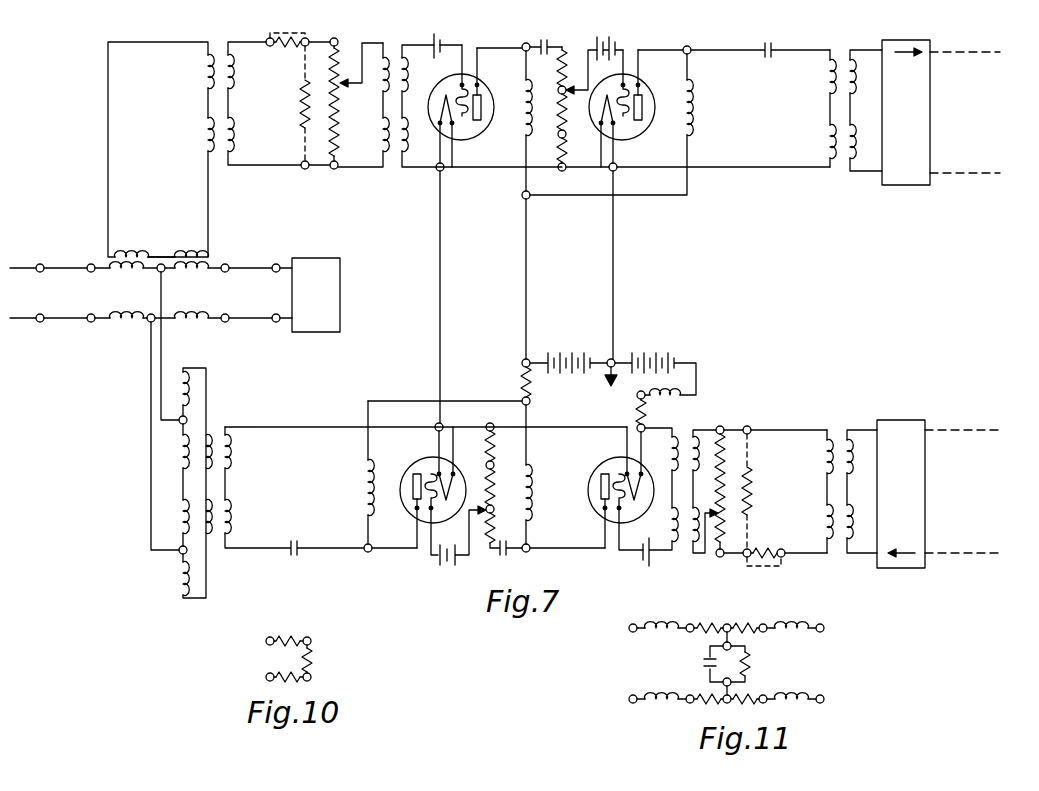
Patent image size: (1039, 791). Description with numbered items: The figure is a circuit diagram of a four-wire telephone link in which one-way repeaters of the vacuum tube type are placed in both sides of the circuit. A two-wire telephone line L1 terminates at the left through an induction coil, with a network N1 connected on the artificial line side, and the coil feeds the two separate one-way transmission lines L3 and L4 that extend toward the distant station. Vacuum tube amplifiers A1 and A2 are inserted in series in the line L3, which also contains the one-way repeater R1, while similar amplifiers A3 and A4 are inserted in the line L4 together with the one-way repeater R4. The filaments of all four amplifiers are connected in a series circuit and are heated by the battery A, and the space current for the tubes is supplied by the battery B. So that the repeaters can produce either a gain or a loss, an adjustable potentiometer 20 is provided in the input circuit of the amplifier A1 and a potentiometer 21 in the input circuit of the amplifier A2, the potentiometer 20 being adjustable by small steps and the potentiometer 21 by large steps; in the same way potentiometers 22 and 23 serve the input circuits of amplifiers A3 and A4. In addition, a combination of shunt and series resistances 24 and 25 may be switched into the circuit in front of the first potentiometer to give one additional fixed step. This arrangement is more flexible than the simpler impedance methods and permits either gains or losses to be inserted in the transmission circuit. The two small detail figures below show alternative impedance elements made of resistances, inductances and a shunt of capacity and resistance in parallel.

The adjustable potentiometer 20 is at (341, 120).
The potentiometer 21 is at (567, 137).
The potentiometer 22 is at (725, 446).
The potentiometer 23 is at (485, 466).
The combination of shunt and series resistances 24 is at (283, 38).
The combination of shunt and series resistances 25 is at (775, 566).
The vacuum tube amplifier A1 is at (474, 127).
The vacuum tube amplifier A2 is at (634, 127).
The vacuum tube amplifier A3 is at (606, 463).
The vacuum tube amplifier A4 is at (417, 463).
The battery A is at (655, 362).
The battery B is at (568, 351).
The network N1 is at (316, 295).
The telephone line L1 is at (151, 292).
The transmission line L3 is at (993, 55).
The transmission line L4 is at (985, 435).
The one-way repeater R1 is at (906, 112).
The one-way repeater R4 is at (901, 494).